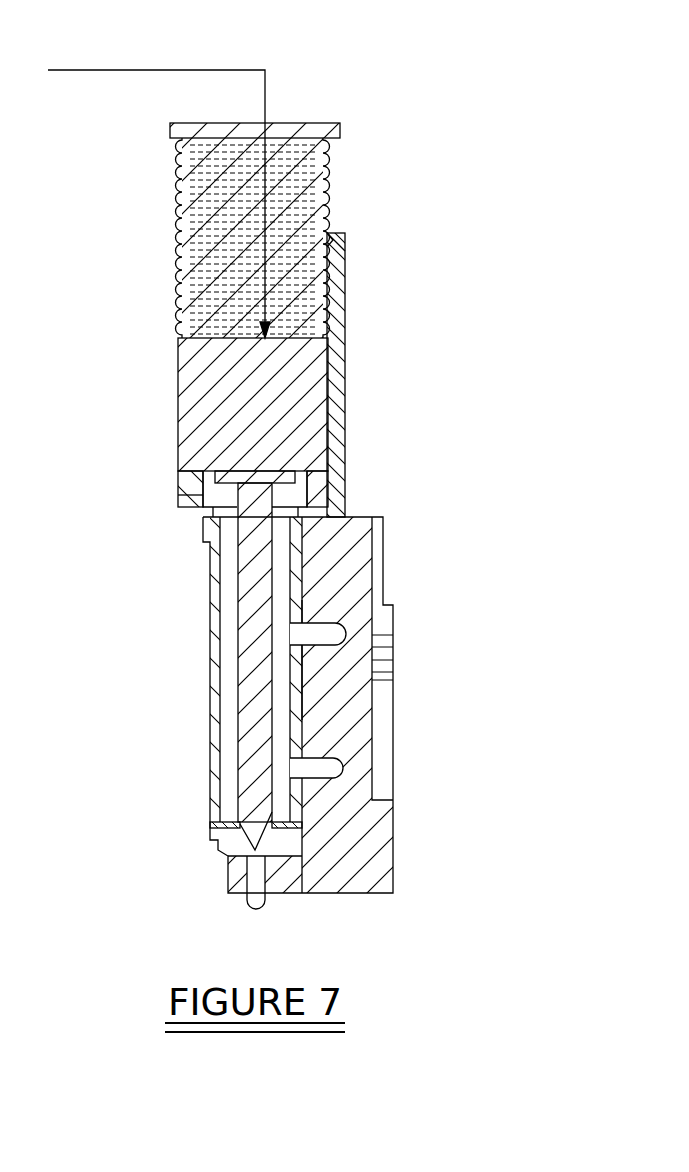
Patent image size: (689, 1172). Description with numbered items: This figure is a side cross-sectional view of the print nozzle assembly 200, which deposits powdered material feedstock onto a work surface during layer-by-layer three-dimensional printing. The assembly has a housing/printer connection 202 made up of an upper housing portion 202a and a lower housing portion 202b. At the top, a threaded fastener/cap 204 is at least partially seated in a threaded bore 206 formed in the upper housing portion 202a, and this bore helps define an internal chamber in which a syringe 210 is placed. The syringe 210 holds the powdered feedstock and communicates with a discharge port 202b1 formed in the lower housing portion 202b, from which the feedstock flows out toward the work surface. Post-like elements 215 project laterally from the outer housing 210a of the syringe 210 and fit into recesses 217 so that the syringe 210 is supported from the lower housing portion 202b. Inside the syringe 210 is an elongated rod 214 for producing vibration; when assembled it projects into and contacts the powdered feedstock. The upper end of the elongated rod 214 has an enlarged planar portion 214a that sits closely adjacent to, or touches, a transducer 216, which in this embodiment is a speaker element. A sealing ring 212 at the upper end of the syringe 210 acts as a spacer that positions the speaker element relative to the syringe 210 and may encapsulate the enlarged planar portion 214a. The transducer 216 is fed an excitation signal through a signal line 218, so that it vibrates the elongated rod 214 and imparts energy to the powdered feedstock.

The print nozzle assembly 200 is at (332, 58).
The housing/printer connection 202 is at (395, 548).
The upper housing portion 202a is at (345, 380).
The lower housing portion 202b is at (350, 838).
The discharge port 202b1 is at (253, 900).
The threaded fastener/cap 204 is at (312, 126).
The threaded bore 206 is at (322, 290).
The syringe 210 is at (225, 770).
The outer housing 210a is at (302, 710).
The sealing ring 212 is at (205, 495).
The elongated rod 214 is at (250, 612).
The enlarged planar portion 214a is at (256, 483).
The post-like elements 215 is at (345, 652).
The transducer 216 is at (218, 360).
The recesses 217 is at (345, 652).
The signal line 218 is at (118, 70).